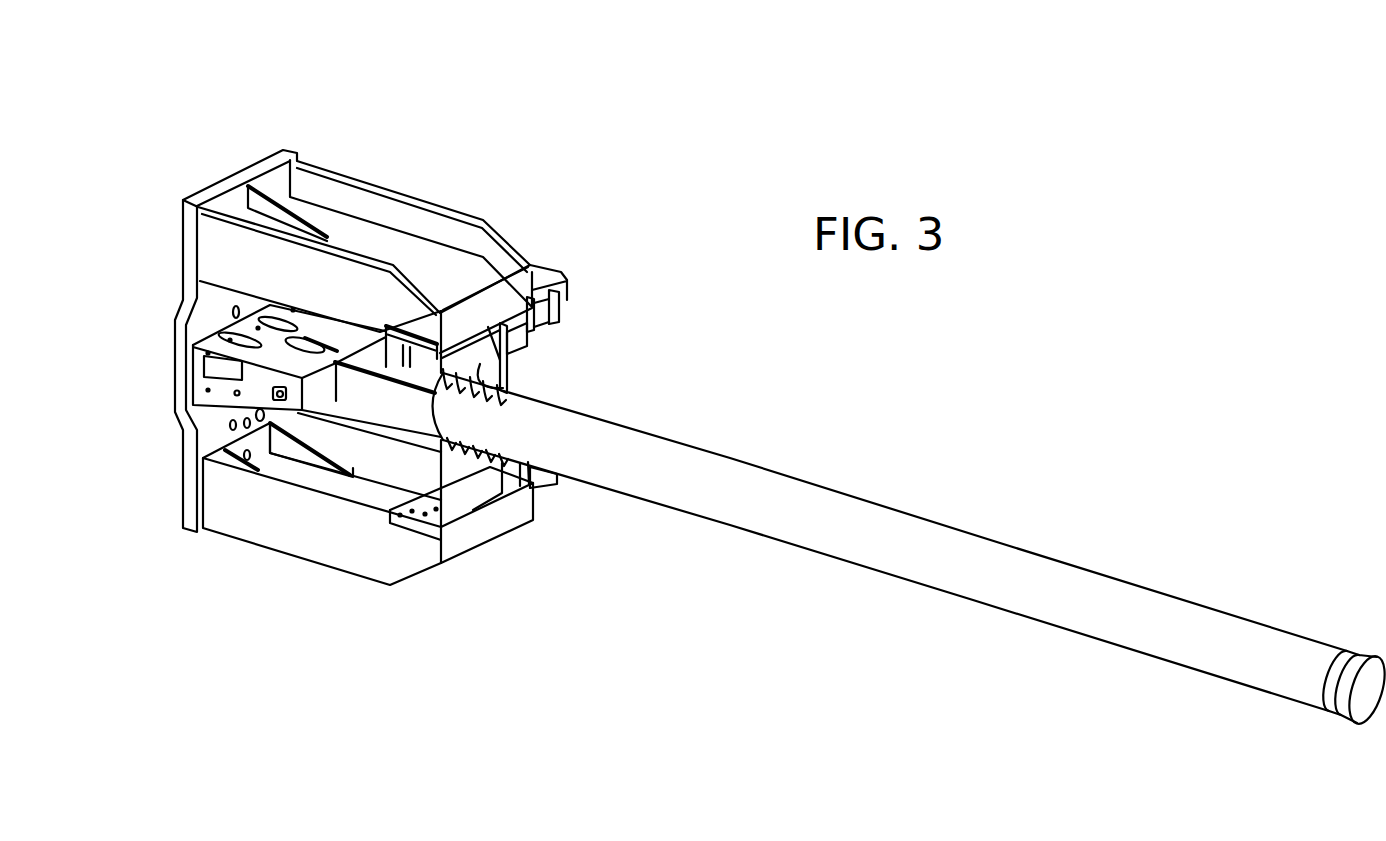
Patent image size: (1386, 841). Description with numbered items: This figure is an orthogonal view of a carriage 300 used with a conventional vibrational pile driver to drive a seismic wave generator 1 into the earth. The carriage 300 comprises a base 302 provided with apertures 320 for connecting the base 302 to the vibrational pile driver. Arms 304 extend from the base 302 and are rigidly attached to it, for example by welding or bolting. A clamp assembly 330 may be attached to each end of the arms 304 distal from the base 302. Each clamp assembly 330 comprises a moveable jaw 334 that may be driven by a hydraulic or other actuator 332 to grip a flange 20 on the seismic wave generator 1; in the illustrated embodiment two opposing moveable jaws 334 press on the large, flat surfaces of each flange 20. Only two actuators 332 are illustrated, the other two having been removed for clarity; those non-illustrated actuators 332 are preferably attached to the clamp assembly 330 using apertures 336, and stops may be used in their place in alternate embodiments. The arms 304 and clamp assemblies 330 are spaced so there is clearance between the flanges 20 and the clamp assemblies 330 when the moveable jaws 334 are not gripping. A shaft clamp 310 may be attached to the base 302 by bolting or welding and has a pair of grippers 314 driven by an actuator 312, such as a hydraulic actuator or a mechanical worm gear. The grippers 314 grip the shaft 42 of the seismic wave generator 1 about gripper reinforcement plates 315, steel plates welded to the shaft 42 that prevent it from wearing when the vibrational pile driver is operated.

The seismic wave generator 1 is at (896, 428).
The flanges 20 is at (480, 364).
The shaft 42 is at (395, 370).
The carriage 300 is at (338, 96).
The base 302 is at (218, 183).
The arms 304 is at (372, 233).
The shaft clamp 310 is at (242, 366).
The actuator 312 is at (283, 394).
The grippers 314 is at (322, 346).
The gripper reinforcement plates 315 is at (351, 380).
The apertures 320 is at (263, 302).
The clamp assembly 330 is at (480, 288).
The actuator 332 is at (562, 305).
The moveable jaw 334 is at (513, 336).
The apertures 336 is at (450, 527).